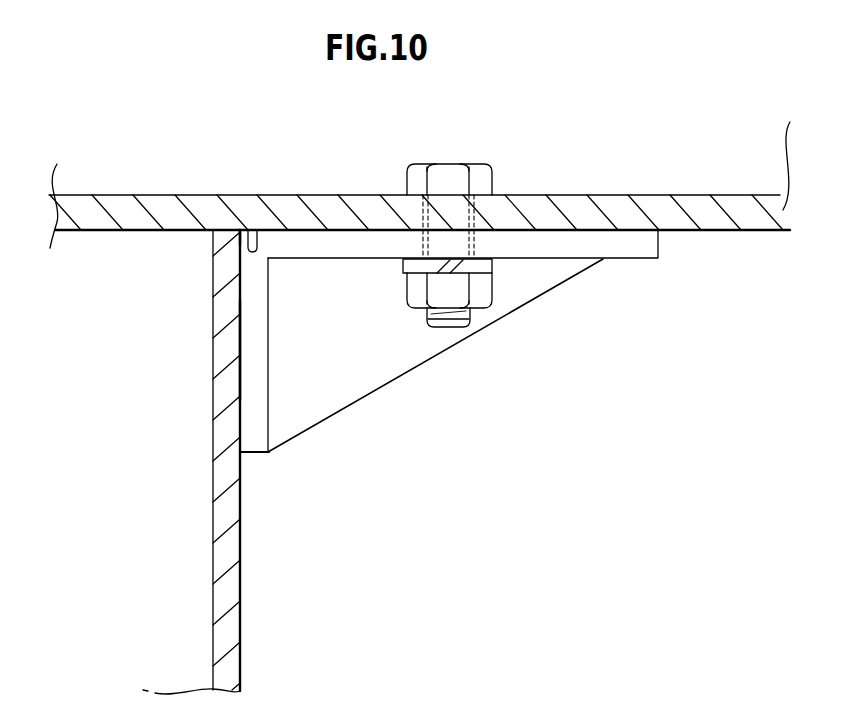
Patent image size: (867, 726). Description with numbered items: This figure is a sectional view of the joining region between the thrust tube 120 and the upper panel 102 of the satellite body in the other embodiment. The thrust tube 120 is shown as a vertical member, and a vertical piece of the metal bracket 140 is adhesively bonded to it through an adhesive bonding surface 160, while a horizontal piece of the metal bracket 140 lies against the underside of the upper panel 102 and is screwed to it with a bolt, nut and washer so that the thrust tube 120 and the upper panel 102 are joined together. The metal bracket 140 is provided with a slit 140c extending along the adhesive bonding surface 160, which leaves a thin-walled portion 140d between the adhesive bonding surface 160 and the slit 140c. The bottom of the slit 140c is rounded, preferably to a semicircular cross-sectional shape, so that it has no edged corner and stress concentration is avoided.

The upper panel 102 is at (124, 206).
The thrust tube 120 is at (225, 587).
The metal bracket 140 is at (378, 389).
The slit 140c is at (262, 238).
The thin-walled portion 140d is at (240, 233).
The adhesive bonding surface 160 is at (239, 351).